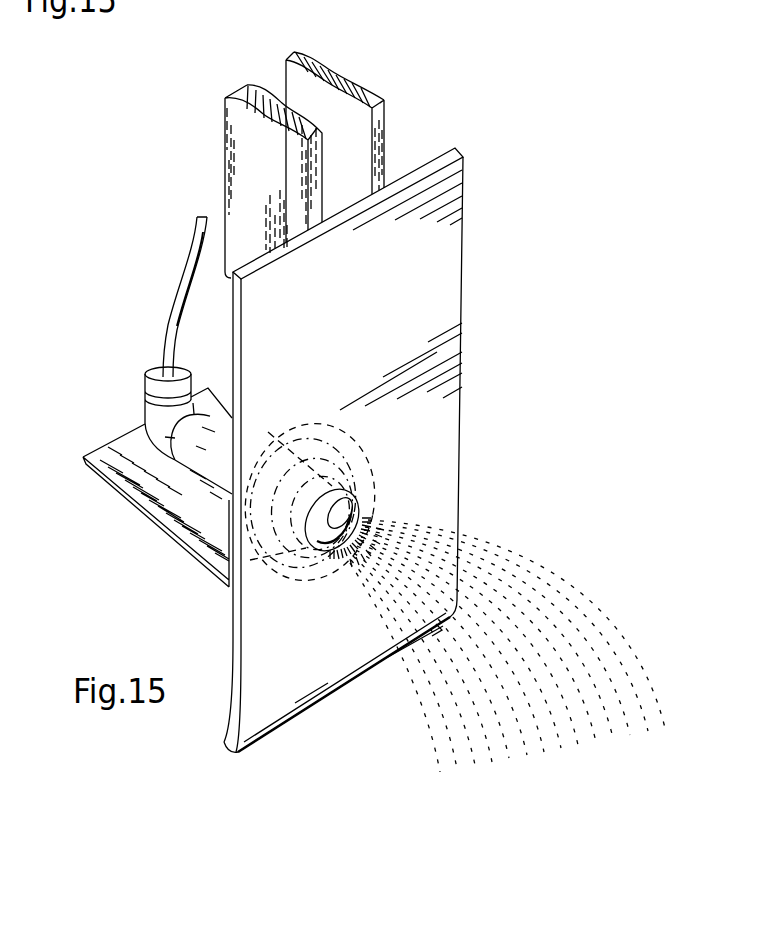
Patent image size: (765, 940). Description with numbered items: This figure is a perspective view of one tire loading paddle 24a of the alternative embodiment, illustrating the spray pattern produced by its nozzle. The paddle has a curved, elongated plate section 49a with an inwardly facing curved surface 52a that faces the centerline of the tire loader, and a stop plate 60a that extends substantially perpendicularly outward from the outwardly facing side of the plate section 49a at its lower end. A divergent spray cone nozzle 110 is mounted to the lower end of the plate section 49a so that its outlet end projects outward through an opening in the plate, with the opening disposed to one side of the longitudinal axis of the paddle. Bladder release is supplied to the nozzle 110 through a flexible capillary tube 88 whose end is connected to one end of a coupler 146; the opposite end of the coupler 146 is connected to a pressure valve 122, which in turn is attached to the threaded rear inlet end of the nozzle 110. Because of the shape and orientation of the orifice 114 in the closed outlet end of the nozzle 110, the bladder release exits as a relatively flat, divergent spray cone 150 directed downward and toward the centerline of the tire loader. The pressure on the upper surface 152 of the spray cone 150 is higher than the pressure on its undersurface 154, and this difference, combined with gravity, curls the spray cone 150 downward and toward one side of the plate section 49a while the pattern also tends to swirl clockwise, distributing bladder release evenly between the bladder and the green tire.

The tire loading paddle 24a is at (410, 117).
The plate section 49a is at (423, 260).
The inwardly facing curved surface 52a is at (362, 375).
The flexible capillary tube 88 is at (173, 297).
The coupler 146 is at (150, 410).
The pressure valve 122 is at (198, 450).
The stop plate 60a is at (138, 511).
The nozzle 110 is at (288, 427).
The orifice 114 is at (350, 491).
The spray cone 150 is at (392, 575).
The upper surface of the spray cone 152 is at (536, 544).
The undersurface of the spray cone 154 is at (392, 706).